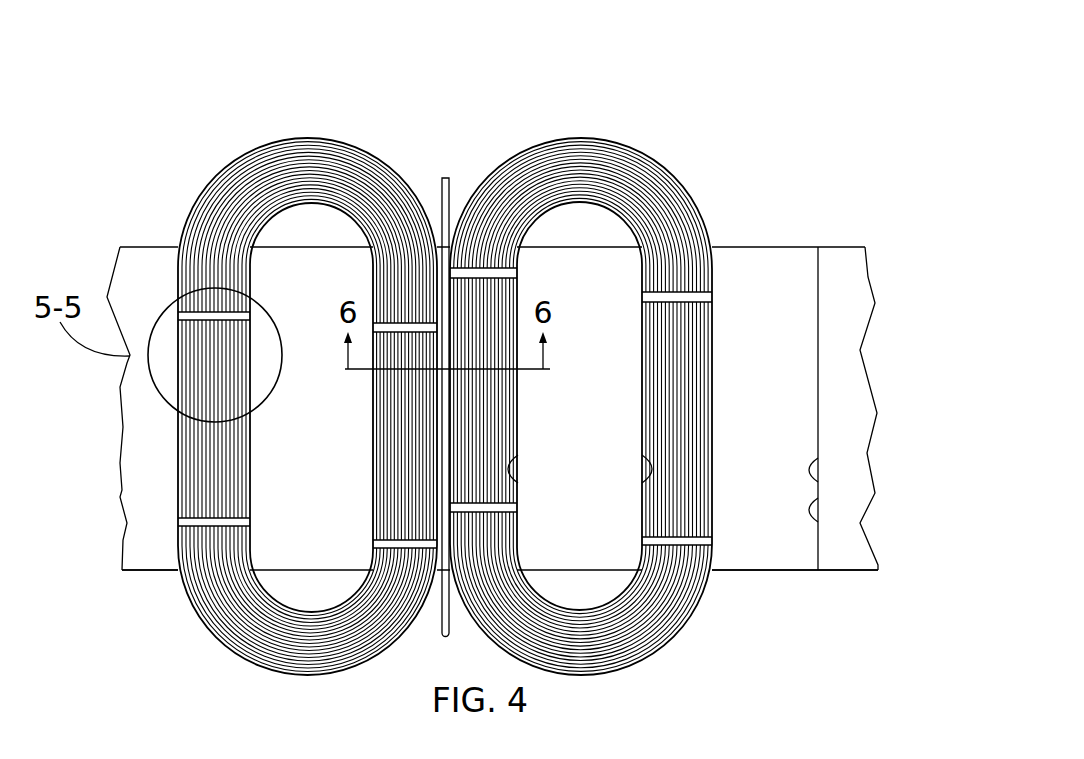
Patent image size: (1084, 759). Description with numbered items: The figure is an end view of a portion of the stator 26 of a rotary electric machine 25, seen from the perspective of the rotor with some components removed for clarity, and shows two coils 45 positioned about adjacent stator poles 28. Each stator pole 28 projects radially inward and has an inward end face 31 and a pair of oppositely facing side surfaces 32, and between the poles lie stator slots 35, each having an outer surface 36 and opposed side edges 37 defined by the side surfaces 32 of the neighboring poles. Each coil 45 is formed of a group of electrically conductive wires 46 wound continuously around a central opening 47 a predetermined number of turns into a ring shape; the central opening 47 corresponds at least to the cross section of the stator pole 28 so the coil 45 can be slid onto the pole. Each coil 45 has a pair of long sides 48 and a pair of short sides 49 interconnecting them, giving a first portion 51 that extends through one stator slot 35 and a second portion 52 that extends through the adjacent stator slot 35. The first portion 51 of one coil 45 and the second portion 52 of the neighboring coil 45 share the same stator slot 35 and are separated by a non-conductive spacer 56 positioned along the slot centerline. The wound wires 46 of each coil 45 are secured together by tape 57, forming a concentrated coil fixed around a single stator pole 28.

The rotary electric machine 25 is at (427, 363).
The stator 26 is at (755, 242).
The stator pole 28 is at (315, 403).
The inward end face 31 is at (322, 282).
The side surface 32 is at (640, 483).
The stator slot 35 is at (168, 586).
The outer surface 36 is at (147, 575).
The side edge 37 is at (820, 518).
The coil 45 is at (208, 200).
The electrically conductive wire 46 is at (660, 205).
The central opening 47 is at (273, 226).
The long side 48 is at (185, 435).
The short side 49 is at (300, 153).
The first portion 51 is at (200, 262).
The second portion 52 is at (395, 295).
The non-conductive spacer 56 is at (445, 640).
The tape 57 is at (187, 318).